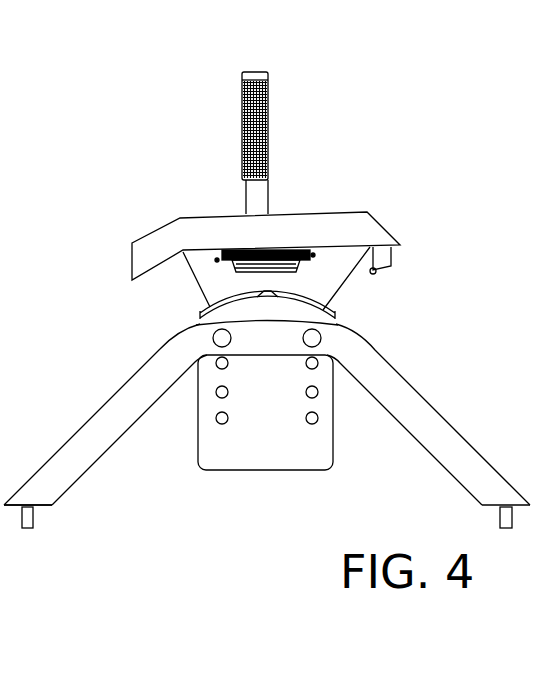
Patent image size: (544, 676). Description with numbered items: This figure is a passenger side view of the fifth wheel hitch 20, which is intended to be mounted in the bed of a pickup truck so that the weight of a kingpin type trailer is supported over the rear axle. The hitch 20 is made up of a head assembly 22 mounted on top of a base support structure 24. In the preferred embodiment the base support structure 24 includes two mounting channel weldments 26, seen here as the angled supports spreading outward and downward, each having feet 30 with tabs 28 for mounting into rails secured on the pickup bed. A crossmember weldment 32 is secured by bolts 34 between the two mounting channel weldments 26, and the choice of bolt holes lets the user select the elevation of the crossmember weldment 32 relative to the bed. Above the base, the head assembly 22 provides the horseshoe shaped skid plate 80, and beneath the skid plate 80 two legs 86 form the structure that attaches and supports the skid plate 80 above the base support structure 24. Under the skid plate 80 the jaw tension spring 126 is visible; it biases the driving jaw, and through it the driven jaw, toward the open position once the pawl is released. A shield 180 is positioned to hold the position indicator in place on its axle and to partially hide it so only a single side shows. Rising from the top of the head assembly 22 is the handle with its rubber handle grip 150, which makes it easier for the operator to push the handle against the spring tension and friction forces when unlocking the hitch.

The fifth wheel hitch 20 is at (176, 120).
The head assembly 22 is at (395, 202).
The base support structure 24 is at (462, 326).
The mounting channel weldments 26 is at (82, 445).
The tabs 28 is at (34, 518).
The feet 30 is at (45, 486).
The crossmember weldment 32 is at (249, 443).
The bolts 34 is at (213, 339).
The skid plate 80 is at (183, 232).
The legs 86 is at (200, 268).
The jaw tension spring 126 is at (277, 268).
The rubber handle grip 150 is at (269, 130).
The shield 180 is at (387, 255).